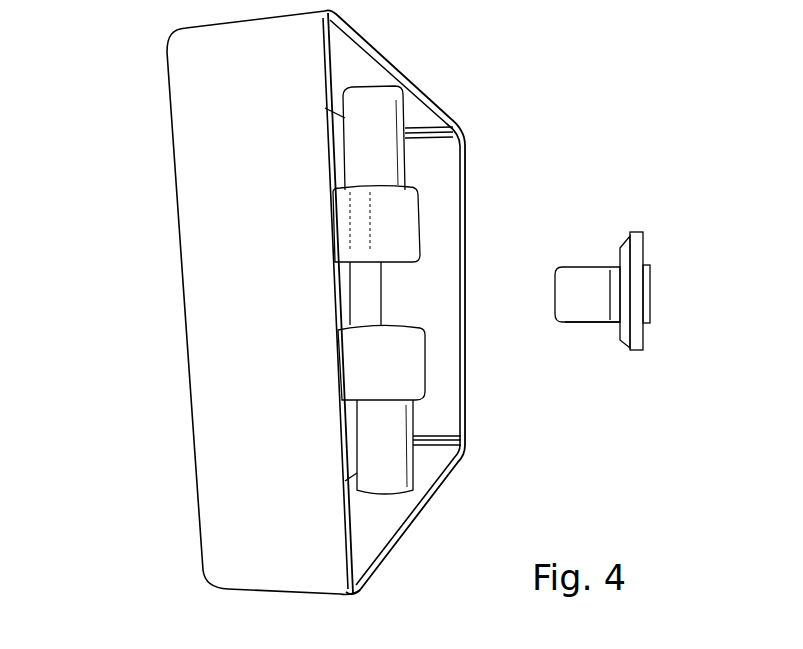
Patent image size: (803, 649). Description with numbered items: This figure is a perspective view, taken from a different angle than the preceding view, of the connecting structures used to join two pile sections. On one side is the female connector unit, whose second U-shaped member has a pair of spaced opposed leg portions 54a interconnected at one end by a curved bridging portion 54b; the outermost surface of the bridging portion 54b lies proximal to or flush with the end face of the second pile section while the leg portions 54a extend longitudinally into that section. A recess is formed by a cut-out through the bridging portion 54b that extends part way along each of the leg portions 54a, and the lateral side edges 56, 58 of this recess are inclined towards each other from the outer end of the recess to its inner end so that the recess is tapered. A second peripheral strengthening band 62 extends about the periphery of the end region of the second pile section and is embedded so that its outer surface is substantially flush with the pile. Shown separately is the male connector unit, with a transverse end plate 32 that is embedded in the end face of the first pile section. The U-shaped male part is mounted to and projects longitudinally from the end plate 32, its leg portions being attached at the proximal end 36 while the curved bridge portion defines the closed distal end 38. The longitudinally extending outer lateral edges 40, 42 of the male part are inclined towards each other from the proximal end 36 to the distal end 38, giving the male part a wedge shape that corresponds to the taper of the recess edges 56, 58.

The second peripheral strengthening band 62 is at (200, 76).
The lateral side edge of the recess 58 is at (413, 271).
The lateral side edge of the recess 56 is at (417, 323).
The leg portions 54a is at (353, 370).
The curved bridging portion 54b is at (410, 207).
The distal end 38 is at (565, 295).
The outer lateral edge 42 is at (593, 267).
The transverse end plate 32 is at (643, 242).
The proximal end 36 is at (618, 292).
The outer lateral edge 40 is at (595, 323).